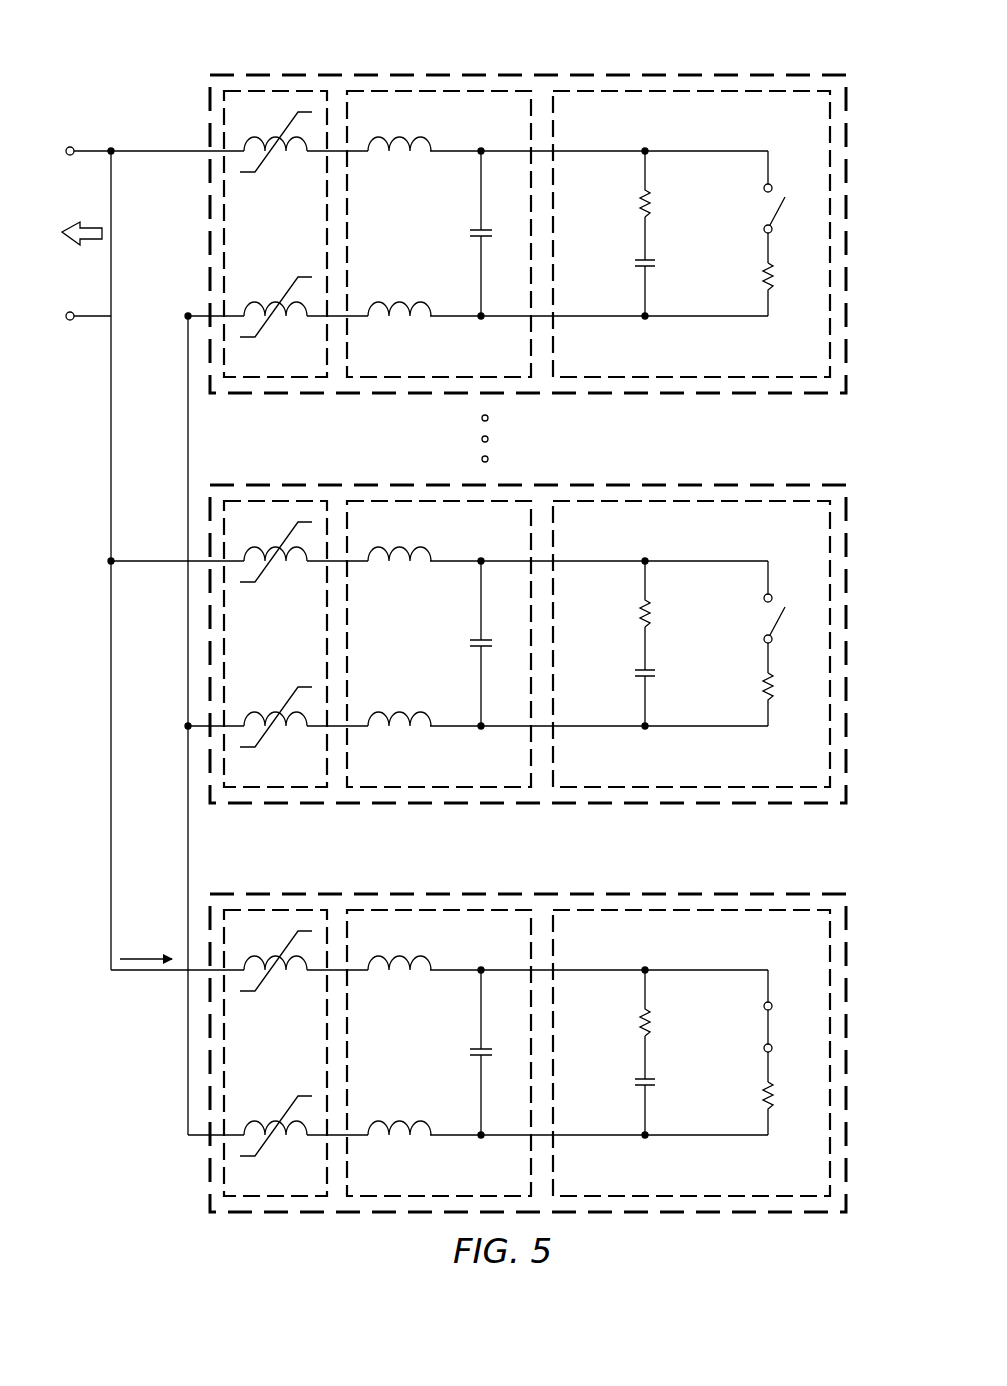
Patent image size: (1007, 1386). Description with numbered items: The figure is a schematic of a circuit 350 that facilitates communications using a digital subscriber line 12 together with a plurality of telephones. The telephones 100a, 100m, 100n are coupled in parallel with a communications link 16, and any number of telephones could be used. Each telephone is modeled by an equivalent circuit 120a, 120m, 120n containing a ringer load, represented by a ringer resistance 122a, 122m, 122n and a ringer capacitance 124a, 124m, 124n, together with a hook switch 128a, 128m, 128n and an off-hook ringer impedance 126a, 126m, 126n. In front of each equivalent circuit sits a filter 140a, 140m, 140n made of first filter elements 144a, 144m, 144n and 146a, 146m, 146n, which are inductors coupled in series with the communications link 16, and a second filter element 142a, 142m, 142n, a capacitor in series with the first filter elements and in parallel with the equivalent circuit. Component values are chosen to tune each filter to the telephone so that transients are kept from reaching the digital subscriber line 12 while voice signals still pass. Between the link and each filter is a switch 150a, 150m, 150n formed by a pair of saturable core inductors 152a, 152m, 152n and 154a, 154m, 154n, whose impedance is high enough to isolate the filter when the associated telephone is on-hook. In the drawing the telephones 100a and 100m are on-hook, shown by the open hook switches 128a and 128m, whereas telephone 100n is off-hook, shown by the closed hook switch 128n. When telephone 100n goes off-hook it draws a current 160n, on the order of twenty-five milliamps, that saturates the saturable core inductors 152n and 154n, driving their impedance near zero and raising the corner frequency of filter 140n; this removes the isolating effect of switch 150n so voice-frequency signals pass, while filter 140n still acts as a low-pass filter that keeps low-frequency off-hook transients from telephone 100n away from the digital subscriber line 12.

The circuit 350 is at (323, 53).
The communications link 16 is at (88, 148).
The digital subscriber line 12 is at (69, 232).
The current 160n is at (148, 924).
The telephone 100a is at (670, 74).
The telephone 100m is at (528, 618).
The telephone 100n is at (528, 1027).
The switch 150a is at (318, 362).
The switch 150m is at (275, 644).
The switch 150n is at (275, 1053).
The saturable core inductor 152a is at (283, 161).
The saturable core inductor 152m is at (281, 574).
The saturable core inductor 152n is at (279, 979).
The saturable core inductor 154a is at (271, 287).
The saturable core inductor 154m is at (270, 695).
The saturable core inductor 154n is at (272, 1105).
The filter 140a is at (508, 131).
The filter 140m is at (439, 644).
The filter 140n is at (439, 1053).
The first filter element 144a is at (410, 161).
The first filter element 144m is at (415, 560).
The first filter element 144n is at (413, 969).
The first filter element 146a is at (410, 322).
The first filter element 146m is at (417, 724).
The first filter element 146n is at (416, 1133).
The second filter element 142a is at (469, 232).
The second filter element 142m is at (454, 643).
The second filter element 142n is at (457, 1052).
The equivalent circuit 120a is at (718, 132).
The equivalent circuit 120m is at (691, 644).
The equivalent circuit 120n is at (691, 1053).
The ringer resistance 122a is at (640, 198).
The ringer resistance 122m is at (618, 592).
The ringer resistance 122n is at (622, 1001).
The ringer capacitance 124a is at (634, 267).
The ringer capacitance 124m is at (619, 678).
The ringer capacitance 124n is at (622, 1087).
The hook switch 128a is at (762, 210).
The hook switch 128m is at (734, 617).
The hook switch 128n is at (731, 1026).
The off-hook ringer impedance 126a is at (762, 275).
The off-hook ringer impedance 126m is at (752, 697).
The off-hook ringer impedance 126n is at (754, 1108).